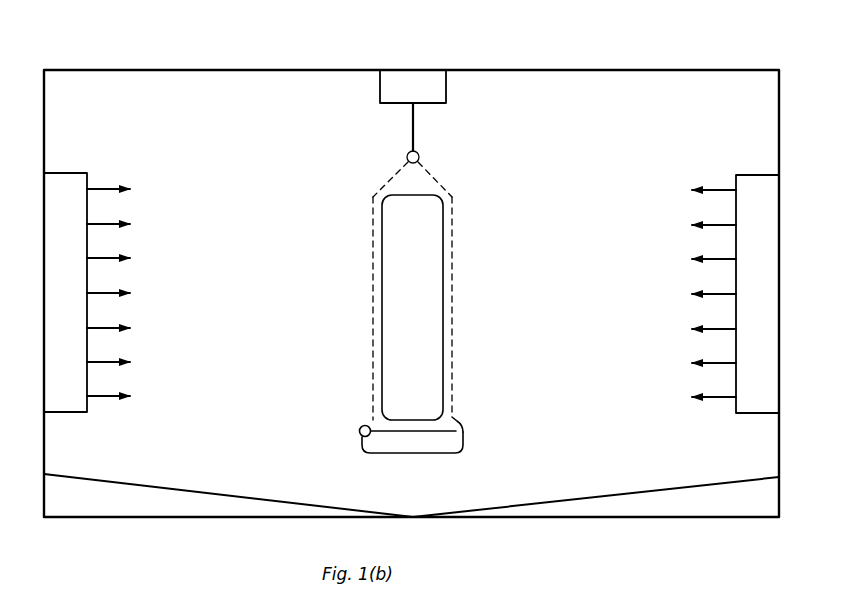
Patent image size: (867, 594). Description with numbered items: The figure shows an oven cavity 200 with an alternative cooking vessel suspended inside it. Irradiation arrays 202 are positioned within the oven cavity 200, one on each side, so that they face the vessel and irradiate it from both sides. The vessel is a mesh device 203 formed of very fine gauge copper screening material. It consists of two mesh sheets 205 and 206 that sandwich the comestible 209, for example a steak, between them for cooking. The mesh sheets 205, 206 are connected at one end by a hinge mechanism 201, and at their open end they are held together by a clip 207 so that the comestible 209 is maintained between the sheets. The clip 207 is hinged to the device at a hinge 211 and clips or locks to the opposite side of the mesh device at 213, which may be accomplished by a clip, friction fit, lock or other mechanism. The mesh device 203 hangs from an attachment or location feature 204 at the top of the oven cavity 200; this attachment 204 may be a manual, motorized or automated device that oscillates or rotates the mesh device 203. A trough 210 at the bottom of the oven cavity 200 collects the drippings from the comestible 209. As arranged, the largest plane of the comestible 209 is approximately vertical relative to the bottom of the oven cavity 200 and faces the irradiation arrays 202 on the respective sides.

The oven cavity 200 is at (645, 70).
The hinge mechanism 201 is at (406, 153).
The irradiation arrays 202 is at (65, 173).
The mesh device 203 is at (458, 182).
The attachment or location feature 204 is at (440, 88).
The mesh sheet 205 is at (371, 278).
The mesh sheet 206 is at (452, 299).
The clip 207 is at (393, 453).
The comestible 209 is at (443, 340).
The trough 210 is at (413, 517).
The hinge 211 is at (362, 426).
The clip lock location 213 is at (457, 424).